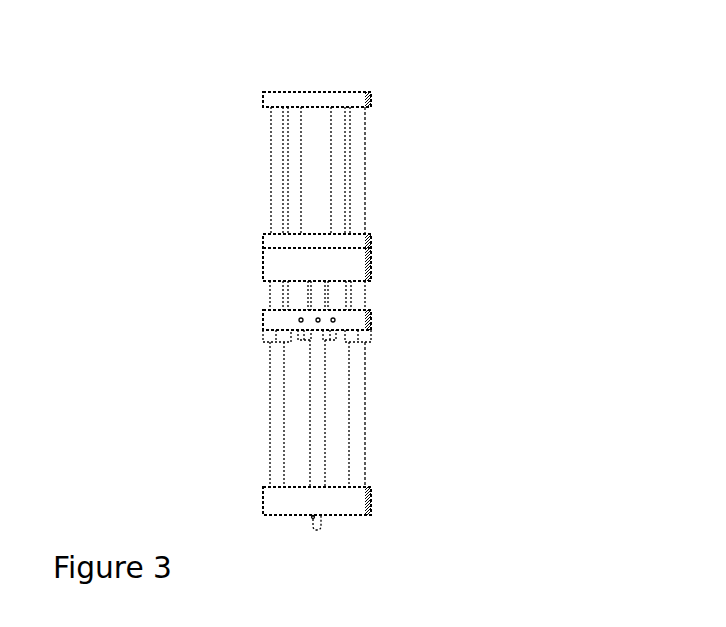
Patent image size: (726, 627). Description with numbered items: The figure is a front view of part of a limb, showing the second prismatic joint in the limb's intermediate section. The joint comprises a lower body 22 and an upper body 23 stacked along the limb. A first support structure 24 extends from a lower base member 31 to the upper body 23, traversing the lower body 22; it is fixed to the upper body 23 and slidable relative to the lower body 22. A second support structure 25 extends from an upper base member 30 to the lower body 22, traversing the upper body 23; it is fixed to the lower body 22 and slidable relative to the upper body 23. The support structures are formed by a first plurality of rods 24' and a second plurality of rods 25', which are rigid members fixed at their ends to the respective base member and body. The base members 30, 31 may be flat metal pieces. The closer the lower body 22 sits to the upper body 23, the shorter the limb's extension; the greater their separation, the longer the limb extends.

The upper base member 30 is at (370, 95).
The second support structure 25 is at (414, 170).
The second plurality of rods 25' is at (453, 162).
The upper body 23 is at (368, 259).
The lower body 22 is at (368, 327).
The first support structure 24 is at (414, 413).
The first plurality of rods 24' is at (470, 414).
The lower base member 31 is at (370, 498).